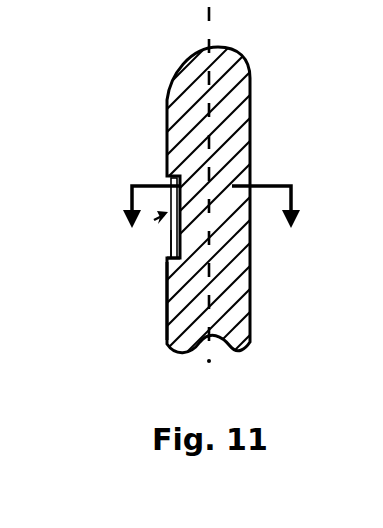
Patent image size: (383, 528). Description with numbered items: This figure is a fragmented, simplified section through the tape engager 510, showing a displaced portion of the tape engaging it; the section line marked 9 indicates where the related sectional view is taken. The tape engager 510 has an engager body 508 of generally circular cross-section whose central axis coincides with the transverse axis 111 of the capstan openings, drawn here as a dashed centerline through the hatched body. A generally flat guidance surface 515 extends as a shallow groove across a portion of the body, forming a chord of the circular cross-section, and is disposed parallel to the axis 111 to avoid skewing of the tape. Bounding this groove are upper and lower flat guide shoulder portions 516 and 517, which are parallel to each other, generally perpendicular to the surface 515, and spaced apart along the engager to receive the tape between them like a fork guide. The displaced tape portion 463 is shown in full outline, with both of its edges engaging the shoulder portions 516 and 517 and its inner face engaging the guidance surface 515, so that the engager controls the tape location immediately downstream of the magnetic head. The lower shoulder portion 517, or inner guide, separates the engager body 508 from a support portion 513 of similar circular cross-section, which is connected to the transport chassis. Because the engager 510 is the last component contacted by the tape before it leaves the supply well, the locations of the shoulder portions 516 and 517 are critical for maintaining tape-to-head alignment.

The axis 111 is at (204, 13).
The engager body 508 is at (191, 200).
The tape engager 510 is at (191, 112).
The upper guide shoulder portion 516 is at (170, 180).
The displaced tape portion 463 is at (154, 220).
The guidance surface 515 is at (170, 240).
The lower guide shoulder portion 517 is at (168, 258).
The support portion 513 is at (187, 291).
The section line 9- 9 is at (212, 199).